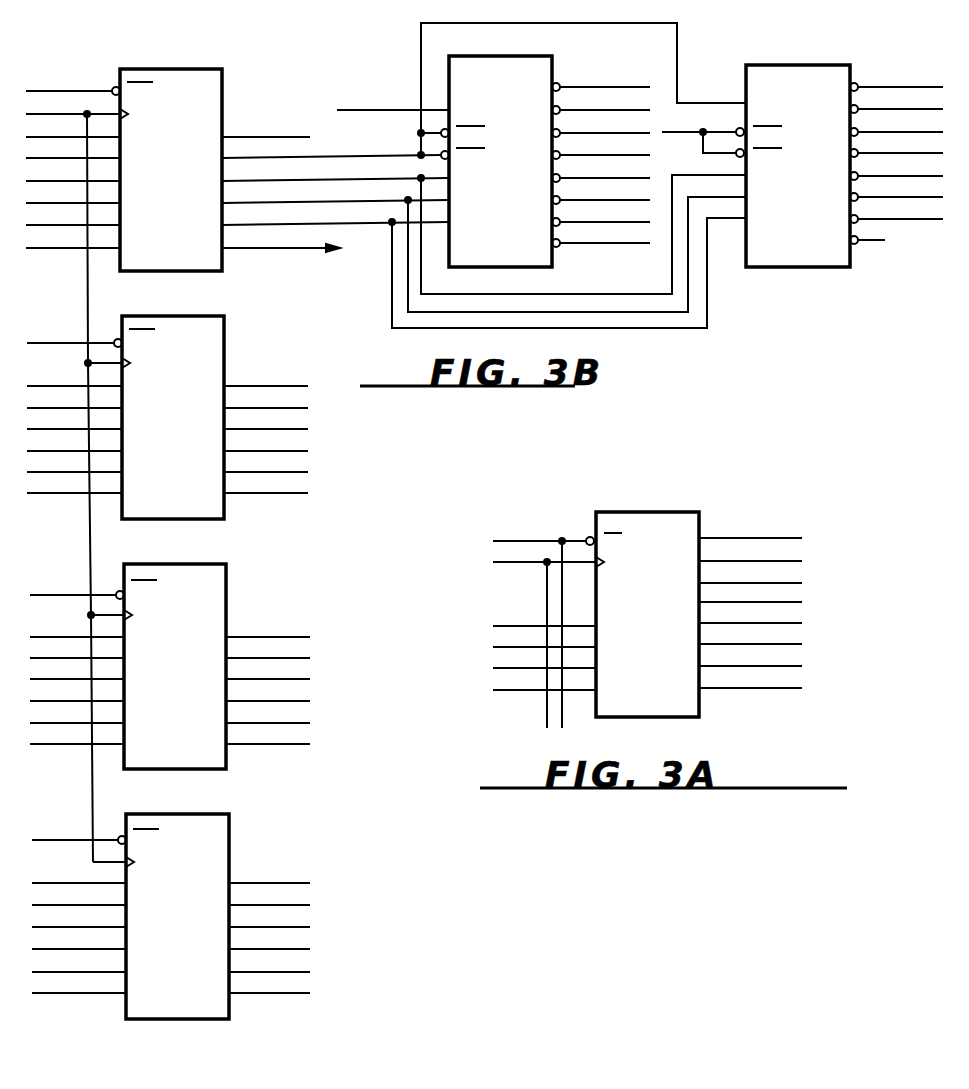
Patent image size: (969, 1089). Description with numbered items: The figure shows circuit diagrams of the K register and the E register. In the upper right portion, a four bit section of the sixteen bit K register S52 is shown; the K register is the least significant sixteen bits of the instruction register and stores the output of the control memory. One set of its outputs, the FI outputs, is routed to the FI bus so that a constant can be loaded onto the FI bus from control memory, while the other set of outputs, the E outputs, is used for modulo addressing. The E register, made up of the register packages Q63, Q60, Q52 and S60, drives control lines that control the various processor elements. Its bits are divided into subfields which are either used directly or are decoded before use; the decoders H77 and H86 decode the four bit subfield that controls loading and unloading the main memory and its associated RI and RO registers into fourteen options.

In FIG. 3B, the E register Q63 is at (183, 146).
In FIG. 3B, the E register Q60 is at (167, 402).
In FIG. 3B, the E register Q52 is at (170, 651).
In FIG. 3B, the E register S60 is at (171, 901).
In FIG. 3B, the decoder H77 is at (484, 175).
In FIG. 3B, the decoder H86 is at (811, 151).
In FIG. 3A, the K register S52 is at (647, 594).